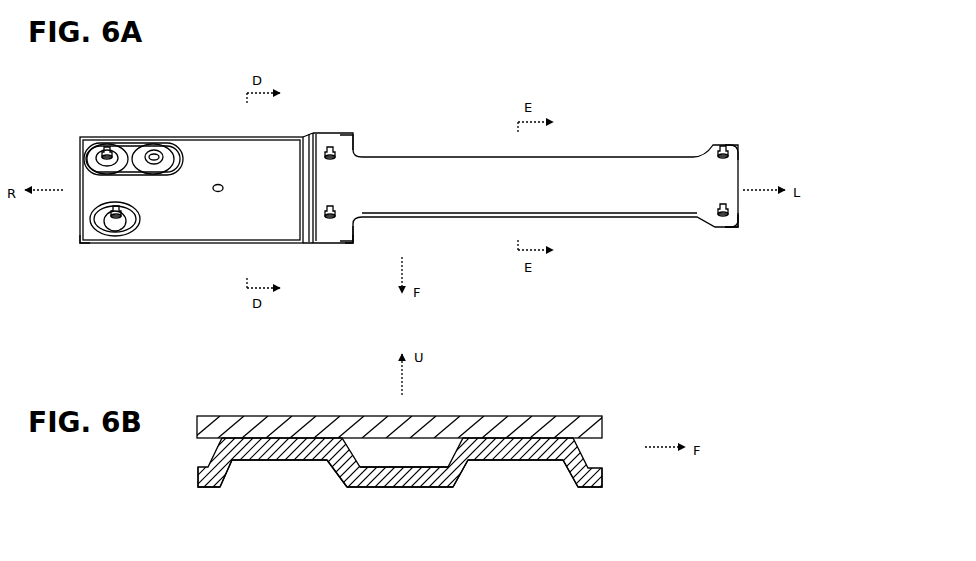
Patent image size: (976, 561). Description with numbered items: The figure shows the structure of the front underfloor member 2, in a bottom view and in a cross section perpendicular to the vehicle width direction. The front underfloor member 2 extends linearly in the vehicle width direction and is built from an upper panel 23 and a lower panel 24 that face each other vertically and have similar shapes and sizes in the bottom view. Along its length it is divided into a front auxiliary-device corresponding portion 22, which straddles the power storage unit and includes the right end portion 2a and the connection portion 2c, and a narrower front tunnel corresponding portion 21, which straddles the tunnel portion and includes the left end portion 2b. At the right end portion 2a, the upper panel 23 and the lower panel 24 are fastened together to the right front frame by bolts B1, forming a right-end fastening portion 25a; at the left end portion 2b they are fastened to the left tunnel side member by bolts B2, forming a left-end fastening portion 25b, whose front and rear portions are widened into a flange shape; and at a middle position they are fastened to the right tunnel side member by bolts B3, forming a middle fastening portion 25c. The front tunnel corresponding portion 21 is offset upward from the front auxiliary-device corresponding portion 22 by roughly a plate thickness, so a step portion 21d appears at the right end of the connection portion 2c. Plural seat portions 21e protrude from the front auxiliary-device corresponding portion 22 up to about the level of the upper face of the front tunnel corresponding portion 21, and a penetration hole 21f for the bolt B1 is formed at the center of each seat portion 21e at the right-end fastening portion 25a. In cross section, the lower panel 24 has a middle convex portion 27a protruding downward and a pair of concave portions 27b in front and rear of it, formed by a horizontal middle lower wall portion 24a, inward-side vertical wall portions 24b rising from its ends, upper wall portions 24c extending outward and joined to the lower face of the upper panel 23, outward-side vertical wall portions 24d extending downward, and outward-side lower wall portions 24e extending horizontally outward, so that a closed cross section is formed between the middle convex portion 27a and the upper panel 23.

In FIG. 6B, the front underfloor member 2 is at (403, 437).
In FIG. 6A, the right end portion 2a is at (105, 260).
In FIG. 6A, the left end portion 2b is at (729, 245).
In FIG. 6A, the connection portion 2c is at (353, 255).
In FIG. 6A, the front tunnel corresponding portion 21 is at (447, 157).
In FIG. 6A, the step portion 21d is at (307, 135).
In FIG. 6A, the seat portion 21e is at (173, 148).
In FIG. 6A, the penetration hole 21f is at (127, 147).
In FIG. 6A, the front auxiliary-device corresponding portion 22 is at (203, 137).
In FIG. 6B, the front auxiliary-device corresponding portion 22 is at (271, 411).
In FIG. 6A, the upper panel 23 is at (639, 124).
In FIG. 6B, the upper panel 23 is at (403, 443).
In FIG. 6B, the lower panel 24 is at (604, 478).
In FIG. 6B, the middle lower wall portion 24a is at (407, 489).
In FIG. 6B, the inward-side vertical wall portion 24b is at (330, 479).
In FIG. 6B, the upper wall portion 24c is at (287, 463).
In FIG. 6B, the outward-side vertical wall portion 24d is at (230, 475).
In FIG. 6B, the outward-side lower wall portion 24e is at (210, 489).
In FIG. 6A, the right-end fastening portion 25a is at (97, 145).
In FIG. 6A, the left-end fastening portion 25b is at (741, 147).
In FIG. 6A, the middle fastening portion 25c is at (354, 139).
In FIG. 6B, the middle convex portion 27a is at (366, 491).
In FIG. 6B, the concave portion 27b is at (397, 470).
In FIG. 6A, the bolt B1 is at (105, 150).
In FIG. 6A, the bolt B2 is at (724, 143).
In FIG. 6A, the bolt B3 is at (332, 144).